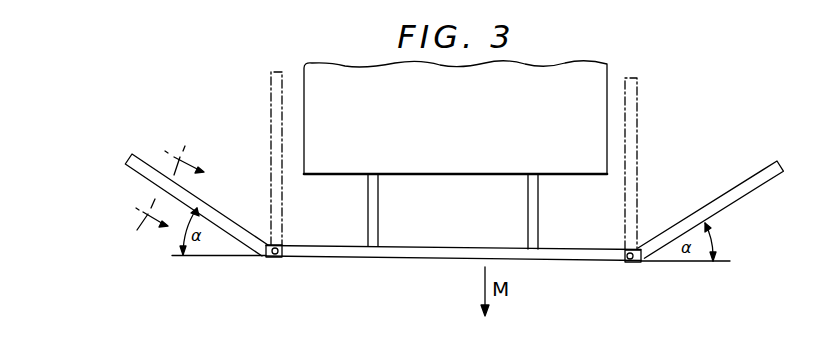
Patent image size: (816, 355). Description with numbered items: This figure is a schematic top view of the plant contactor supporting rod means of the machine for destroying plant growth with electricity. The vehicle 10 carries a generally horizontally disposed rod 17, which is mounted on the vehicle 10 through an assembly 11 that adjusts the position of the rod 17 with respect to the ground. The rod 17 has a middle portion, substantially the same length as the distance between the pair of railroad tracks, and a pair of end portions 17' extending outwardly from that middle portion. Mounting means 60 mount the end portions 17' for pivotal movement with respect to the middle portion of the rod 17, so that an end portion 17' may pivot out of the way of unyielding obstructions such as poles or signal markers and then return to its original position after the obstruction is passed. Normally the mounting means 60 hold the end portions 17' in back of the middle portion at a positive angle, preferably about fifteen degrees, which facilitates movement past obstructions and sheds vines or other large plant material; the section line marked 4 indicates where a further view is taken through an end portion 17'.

The vehicle 10 is at (607, 120).
The assembly 11 is at (549, 224).
The rod 17 is at (453, 268).
The end portions 17' is at (454, 221).
The mounting means 60 is at (282, 261).
The section line 4- 4 is at (177, 201).